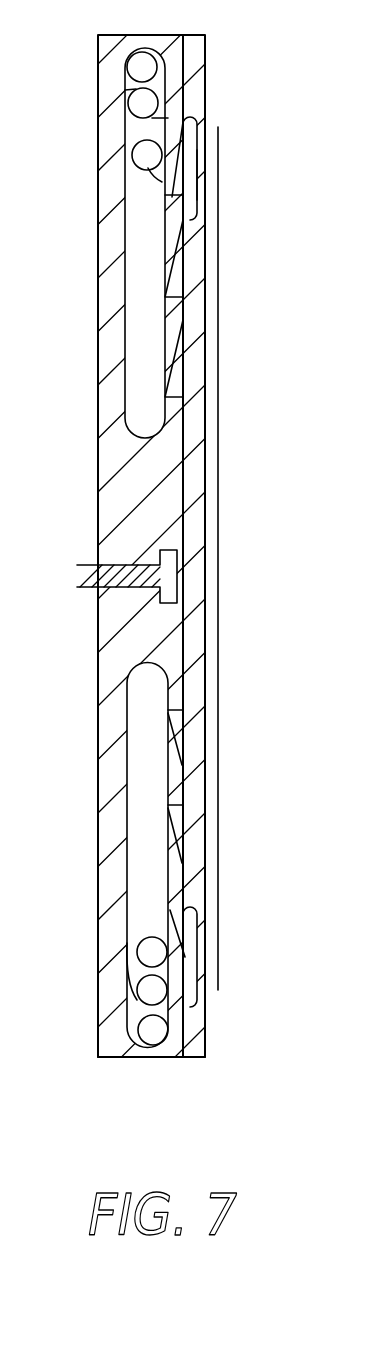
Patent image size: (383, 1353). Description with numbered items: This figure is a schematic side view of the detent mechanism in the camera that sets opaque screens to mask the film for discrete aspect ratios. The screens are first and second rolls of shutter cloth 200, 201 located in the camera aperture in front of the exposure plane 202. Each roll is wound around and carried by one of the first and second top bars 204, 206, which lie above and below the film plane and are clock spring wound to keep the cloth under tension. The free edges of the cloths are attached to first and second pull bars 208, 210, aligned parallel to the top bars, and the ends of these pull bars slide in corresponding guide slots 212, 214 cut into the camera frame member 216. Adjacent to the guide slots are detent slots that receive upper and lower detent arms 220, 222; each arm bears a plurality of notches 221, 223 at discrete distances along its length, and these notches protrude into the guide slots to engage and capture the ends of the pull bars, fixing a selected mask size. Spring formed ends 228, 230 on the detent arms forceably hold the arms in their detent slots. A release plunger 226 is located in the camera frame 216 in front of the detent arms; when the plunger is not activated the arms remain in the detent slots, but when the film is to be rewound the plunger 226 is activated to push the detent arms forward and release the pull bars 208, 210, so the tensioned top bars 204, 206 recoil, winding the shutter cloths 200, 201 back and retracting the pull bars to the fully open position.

The first roll of shutter cloth 200 is at (210, 112).
The second roll of shutter cloth 201 is at (130, 988).
The exposure plane 202 is at (218, 152).
The first top bar 204 is at (150, 67).
The second top bar 206 is at (160, 1043).
The first pull bar 208 is at (195, 175).
The second pull bar 210 is at (150, 936).
The upper guide slot 212 is at (131, 297).
The lower guide slot 214 is at (125, 797).
The camera frame member 216 is at (195, 1022).
The upper detent arm 220 is at (188, 478).
The notches of upper detent arm 221 is at (172, 197).
The lower detent arm 222 is at (183, 651).
The notches of lower detent arm 223 is at (165, 720).
The release plunger 226 is at (177, 580).
The spring formed end of upper detent arm 228 is at (195, 205).
The spring formed end of lower detent arm 230 is at (193, 957).